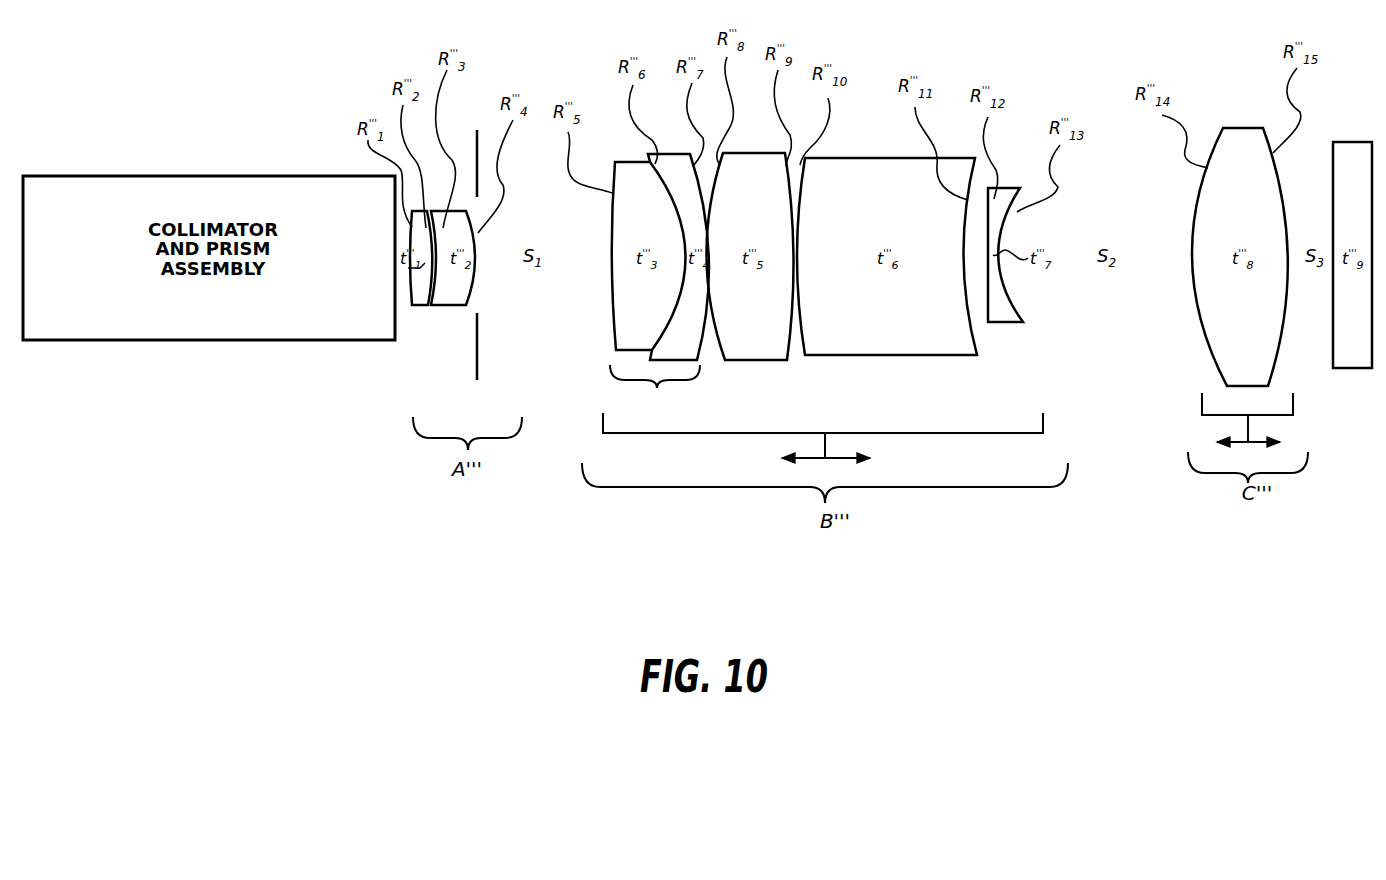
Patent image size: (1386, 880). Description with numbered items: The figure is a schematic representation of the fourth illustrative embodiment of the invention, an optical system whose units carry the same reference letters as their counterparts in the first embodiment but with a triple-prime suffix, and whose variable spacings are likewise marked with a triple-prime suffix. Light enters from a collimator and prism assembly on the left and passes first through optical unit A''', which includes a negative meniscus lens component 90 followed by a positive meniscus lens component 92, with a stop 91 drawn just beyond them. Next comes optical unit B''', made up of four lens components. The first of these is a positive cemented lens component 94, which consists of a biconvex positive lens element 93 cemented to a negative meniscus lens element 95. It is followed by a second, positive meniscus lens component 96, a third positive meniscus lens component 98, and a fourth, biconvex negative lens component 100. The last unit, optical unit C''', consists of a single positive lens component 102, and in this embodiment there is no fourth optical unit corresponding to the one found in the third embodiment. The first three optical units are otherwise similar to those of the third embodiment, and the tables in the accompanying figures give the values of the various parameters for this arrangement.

The negative meniscus lens component 90 is at (413, 306).
The aperture stop 91 is at (477, 350).
The positive meniscus lens component 92 is at (447, 306).
The biconvex positive lens element 93 is at (656, 331).
The positive cemented lens component 94 is at (655, 394).
The negative meniscus lens element 95 is at (667, 352).
The positive meniscus lens component 96 is at (768, 333).
The positive meniscus lens component 98 is at (868, 331).
The biconvex negative lens component 100 is at (1010, 323).
The positive lens component 102 is at (1264, 355).